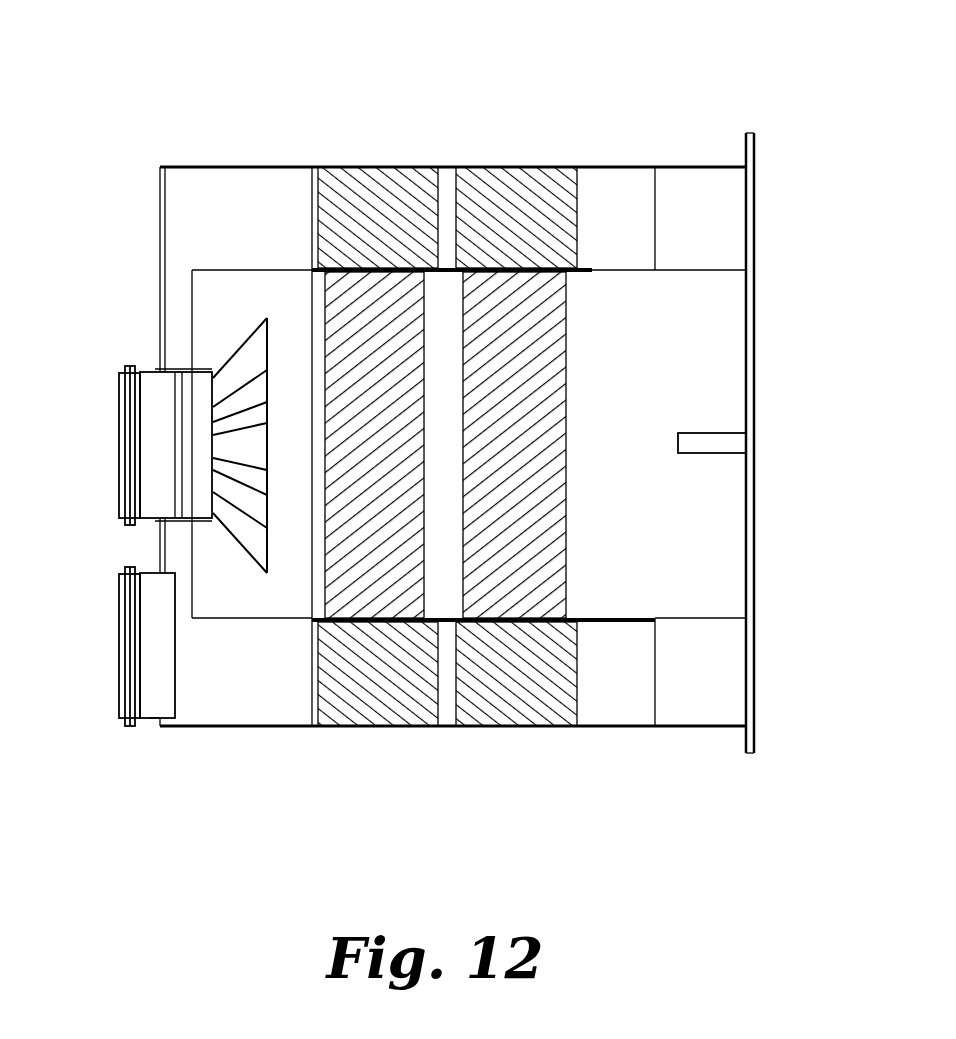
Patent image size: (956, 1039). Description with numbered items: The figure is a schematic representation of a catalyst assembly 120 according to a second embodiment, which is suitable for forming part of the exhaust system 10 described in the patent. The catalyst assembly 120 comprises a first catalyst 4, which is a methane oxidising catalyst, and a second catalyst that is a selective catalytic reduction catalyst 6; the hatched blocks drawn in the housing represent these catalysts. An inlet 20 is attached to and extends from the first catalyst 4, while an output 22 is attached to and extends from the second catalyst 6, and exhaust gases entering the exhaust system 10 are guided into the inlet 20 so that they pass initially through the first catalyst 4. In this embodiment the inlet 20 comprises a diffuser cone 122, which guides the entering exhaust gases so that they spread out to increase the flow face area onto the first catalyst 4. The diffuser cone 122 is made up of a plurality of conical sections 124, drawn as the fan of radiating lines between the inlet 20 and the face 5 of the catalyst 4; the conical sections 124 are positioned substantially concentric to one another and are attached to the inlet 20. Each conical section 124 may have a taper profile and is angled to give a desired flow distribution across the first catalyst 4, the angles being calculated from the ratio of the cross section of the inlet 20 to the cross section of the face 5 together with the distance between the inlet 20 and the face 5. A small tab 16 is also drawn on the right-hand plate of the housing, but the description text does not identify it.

The exhaust system 10 is at (142, 117).
The catalyst assembly 120 is at (348, 158).
The face of the catalyst 5 is at (317, 296).
The selective catalytic reduction catalyst 6 is at (548, 224).
The first catalyst 4 is at (548, 381).
The mounting tab 16 is at (728, 442).
The inlet 20 is at (150, 449).
The output 22 is at (127, 644).
The conical sections 124 is at (258, 350).
The diffuser cone 122 is at (247, 553).